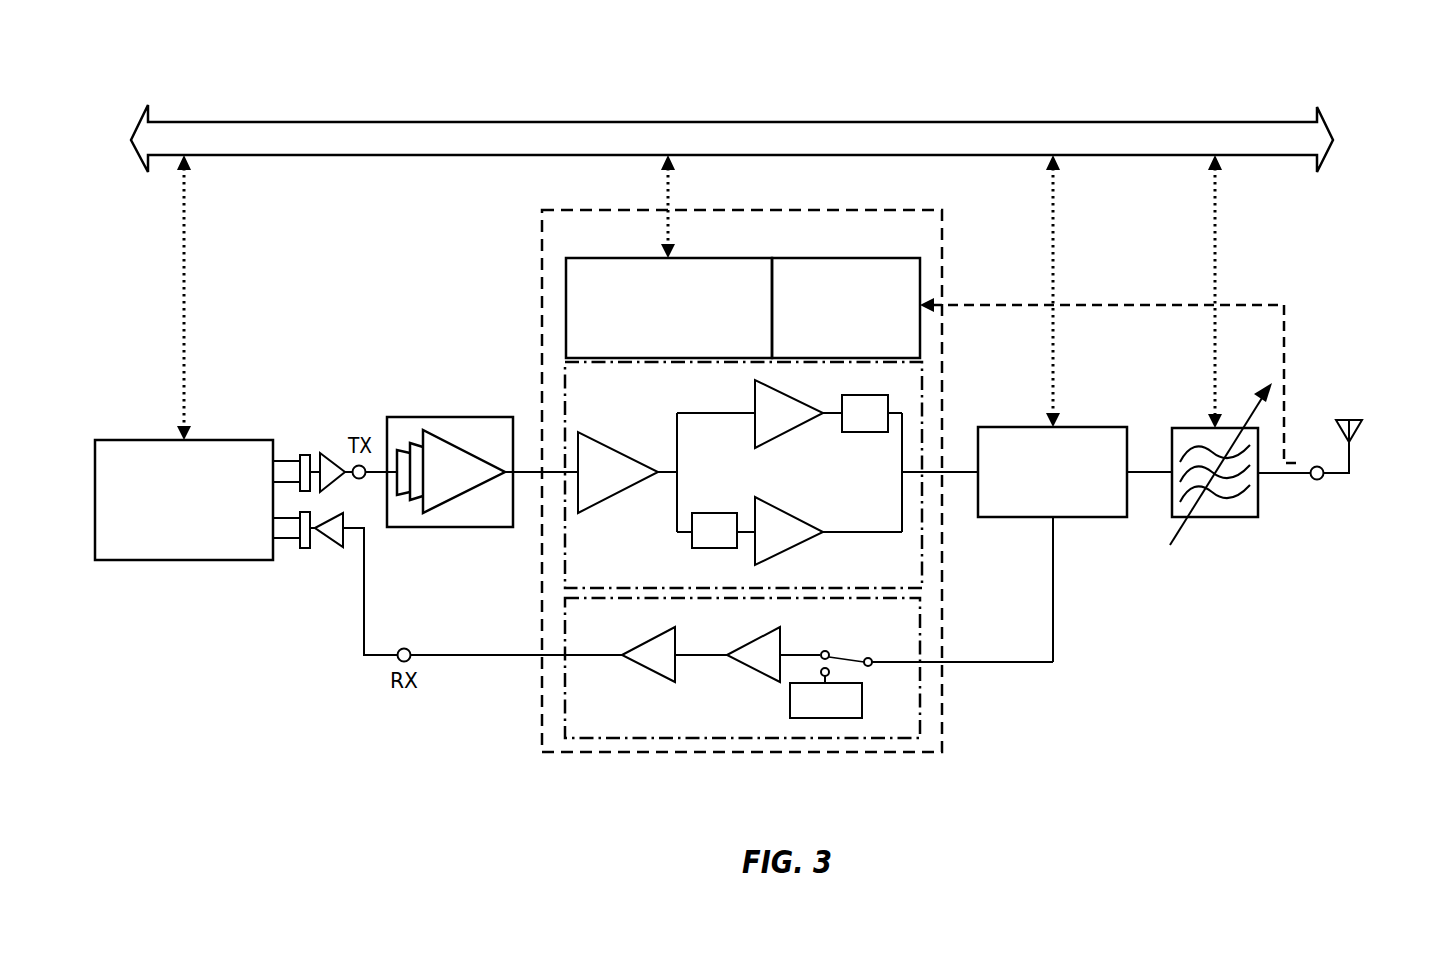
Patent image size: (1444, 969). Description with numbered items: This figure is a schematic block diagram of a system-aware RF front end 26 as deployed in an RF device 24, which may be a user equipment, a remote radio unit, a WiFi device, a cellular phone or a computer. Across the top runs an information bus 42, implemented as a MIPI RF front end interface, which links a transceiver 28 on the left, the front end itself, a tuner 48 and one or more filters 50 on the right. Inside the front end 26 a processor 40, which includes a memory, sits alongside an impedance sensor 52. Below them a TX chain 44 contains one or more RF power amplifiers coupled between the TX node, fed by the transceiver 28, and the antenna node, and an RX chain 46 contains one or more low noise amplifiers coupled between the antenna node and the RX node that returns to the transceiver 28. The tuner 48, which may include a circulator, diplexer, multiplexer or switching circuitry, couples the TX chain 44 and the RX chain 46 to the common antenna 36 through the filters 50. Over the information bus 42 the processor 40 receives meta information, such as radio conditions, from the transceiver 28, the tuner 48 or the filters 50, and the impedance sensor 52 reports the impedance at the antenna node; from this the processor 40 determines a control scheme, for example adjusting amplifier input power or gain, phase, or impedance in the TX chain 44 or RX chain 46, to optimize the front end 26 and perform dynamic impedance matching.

The RF device 24 is at (1010, 56).
The information bus 42 is at (888, 151).
The system-aware RF front end 26 is at (599, 246).
The processor 40 is at (680, 351).
The impedance sensor 52 is at (857, 351).
The TX chain 44 is at (612, 407).
The RX chain 46 is at (612, 637).
The transceiver 28 is at (196, 527).
The tuner 48 is at (1064, 499).
The filters 50 is at (1237, 517).
The antenna 36 is at (1357, 418).